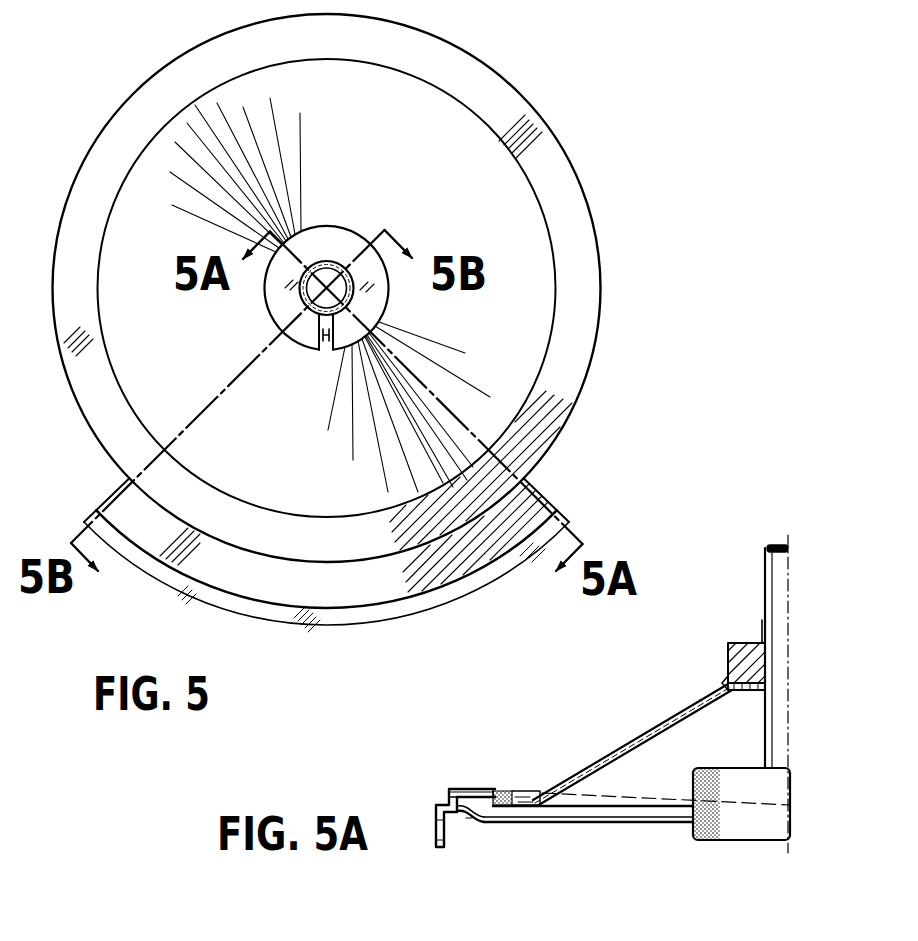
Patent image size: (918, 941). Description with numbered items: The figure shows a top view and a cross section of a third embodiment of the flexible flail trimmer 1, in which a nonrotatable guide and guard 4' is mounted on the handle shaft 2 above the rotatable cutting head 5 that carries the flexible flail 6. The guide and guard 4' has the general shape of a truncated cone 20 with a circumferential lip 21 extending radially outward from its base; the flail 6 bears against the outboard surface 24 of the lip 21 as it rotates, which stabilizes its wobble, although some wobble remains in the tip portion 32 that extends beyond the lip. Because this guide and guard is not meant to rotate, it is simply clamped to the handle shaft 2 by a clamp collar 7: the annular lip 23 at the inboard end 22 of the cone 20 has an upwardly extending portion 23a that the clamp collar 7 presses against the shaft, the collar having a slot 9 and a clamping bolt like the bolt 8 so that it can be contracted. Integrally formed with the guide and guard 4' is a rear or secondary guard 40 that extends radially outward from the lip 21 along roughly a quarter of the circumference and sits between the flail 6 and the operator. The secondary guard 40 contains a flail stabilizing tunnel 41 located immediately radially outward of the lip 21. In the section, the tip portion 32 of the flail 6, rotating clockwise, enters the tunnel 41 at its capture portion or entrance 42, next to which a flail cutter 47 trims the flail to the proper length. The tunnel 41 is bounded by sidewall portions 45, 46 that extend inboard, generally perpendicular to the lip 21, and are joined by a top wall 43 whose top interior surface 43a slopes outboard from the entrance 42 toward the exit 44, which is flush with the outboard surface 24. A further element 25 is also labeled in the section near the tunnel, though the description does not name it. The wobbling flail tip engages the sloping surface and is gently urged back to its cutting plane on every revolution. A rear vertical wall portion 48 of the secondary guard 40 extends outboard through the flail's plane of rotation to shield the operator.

In FIG. 5, the flexible flail trimmer 1 is at (388, 343).
In FIG. 5A, the flexible flail trimmer 1 is at (600, 726).
In FIG. 5, the handle shaft 2 is at (333, 263).
In FIG. 5A, the handle shaft 2 is at (764, 601).
In FIG. 5, the guide and guard 4' is at (336, 288).
In FIG. 5A, the guide and guard 4' is at (671, 681).
In FIG. 5A, the cutting head 5 is at (738, 842).
In FIG. 5A, the flexible flail 6 is at (564, 827).
In FIG. 5, the clamp collar 7 is at (393, 302).
In FIG. 5A, the clamp collar 7 is at (725, 641).
In FIG. 5, the clamping bolt 8 is at (319, 342).
In FIG. 5, the slot 9 is at (327, 352).
In FIG. 5, the truncated cone 20 is at (461, 218).
In FIG. 5A, the truncated cone 20 is at (610, 747).
In FIG. 5A, the circumferential lip 21 is at (500, 797).
In FIG. 5A, the inboard end of the truncated cone 22 is at (726, 677).
In FIG. 5A, the annular lip 23 is at (751, 691).
In FIG. 5A, the upwardly extending portion 23a is at (765, 640).
In FIG. 5A, the outboard surface 24 is at (498, 814).
In FIG. 5A, the spacer 25 is at (521, 795).
In FIG. 5A, the tip portion of the flail 32 is at (470, 823).
In FIG. 5, the secondary guard 40 is at (334, 564).
In FIG. 5A, the secondary guard 40 is at (453, 797).
In FIG. 5, the flail stabilizing tunnel 41 is at (276, 608).
In FIG. 5A, the flail stabilizing tunnel 41 is at (461, 789).
In FIG. 5, the tunnel entrance 42 is at (560, 494).
In FIG. 5A, the tunnel entrance 42 is at (480, 790).
In FIG. 5, the top wall 43 is at (323, 598).
In FIG. 5A, the top interior surface 43a is at (494, 792).
In FIG. 5, the tunnel exit 44 is at (107, 497).
In FIG. 5A, the sidewall portion 45 is at (447, 800).
In FIG. 5A, the sidewall portion 46 is at (508, 795).
In FIG. 5A, the flail cutter 47 is at (443, 846).
In FIG. 5A, the rear vertical wall portion 48 is at (437, 826).